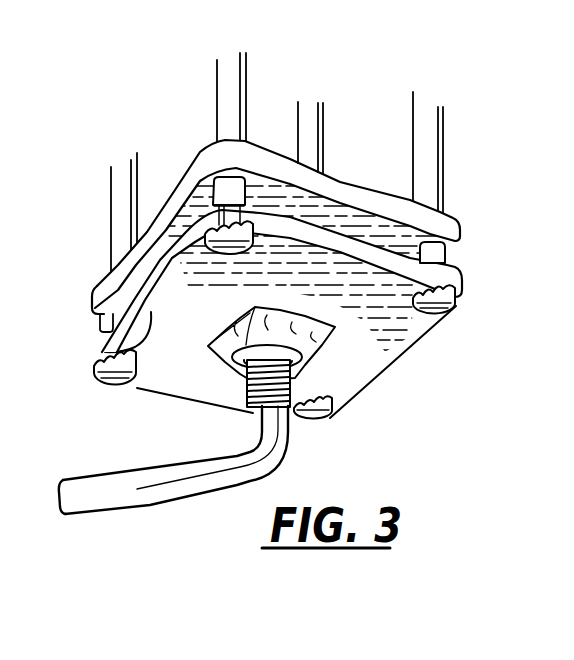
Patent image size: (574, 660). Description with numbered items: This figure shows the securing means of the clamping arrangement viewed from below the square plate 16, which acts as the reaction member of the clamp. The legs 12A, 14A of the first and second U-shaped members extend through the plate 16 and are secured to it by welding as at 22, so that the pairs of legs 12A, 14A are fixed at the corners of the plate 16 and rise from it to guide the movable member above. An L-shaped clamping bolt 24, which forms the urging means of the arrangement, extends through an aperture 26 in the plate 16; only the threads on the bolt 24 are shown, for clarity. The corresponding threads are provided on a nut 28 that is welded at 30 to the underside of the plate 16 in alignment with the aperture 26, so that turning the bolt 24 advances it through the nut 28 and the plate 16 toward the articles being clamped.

The leg 12A is at (233, 128).
The leg 14A is at (417, 150).
The square plate 16 is at (97, 355).
The welding 22 is at (117, 389).
The L-shaped clamping bolt 24 is at (152, 480).
The aperture 26 is at (242, 372).
The nut 28 is at (292, 364).
The weld 30 is at (234, 368).